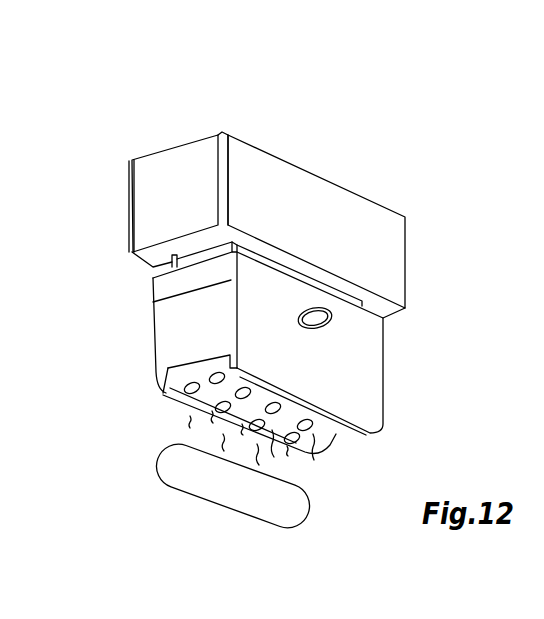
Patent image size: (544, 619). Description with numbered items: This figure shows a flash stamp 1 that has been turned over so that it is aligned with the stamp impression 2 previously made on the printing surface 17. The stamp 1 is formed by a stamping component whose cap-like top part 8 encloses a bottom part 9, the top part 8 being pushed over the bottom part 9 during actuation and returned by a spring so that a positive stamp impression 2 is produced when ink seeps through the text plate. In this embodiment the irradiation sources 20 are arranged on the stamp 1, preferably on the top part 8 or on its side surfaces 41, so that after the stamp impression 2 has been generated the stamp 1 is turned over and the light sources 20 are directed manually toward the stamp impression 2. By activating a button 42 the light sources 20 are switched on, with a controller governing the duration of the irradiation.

The stamp 1 is at (125, 86).
The printing surface 17 is at (238, 119).
The bottom part 9 is at (295, 208).
The side surfaces 41 is at (183, 197).
The button 42 is at (318, 318).
The top part 8 is at (328, 376).
The irradiation sources 20 is at (167, 398).
The stamp impression 2 is at (233, 483).